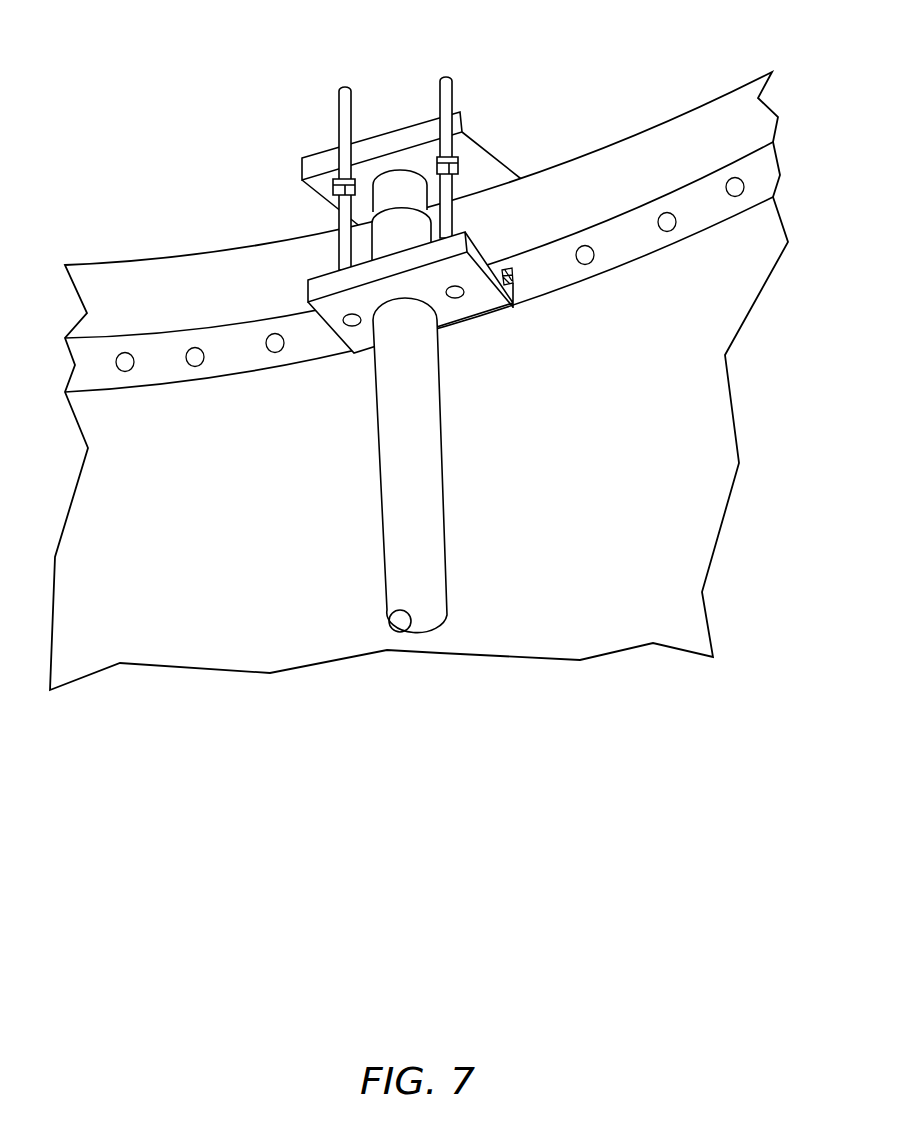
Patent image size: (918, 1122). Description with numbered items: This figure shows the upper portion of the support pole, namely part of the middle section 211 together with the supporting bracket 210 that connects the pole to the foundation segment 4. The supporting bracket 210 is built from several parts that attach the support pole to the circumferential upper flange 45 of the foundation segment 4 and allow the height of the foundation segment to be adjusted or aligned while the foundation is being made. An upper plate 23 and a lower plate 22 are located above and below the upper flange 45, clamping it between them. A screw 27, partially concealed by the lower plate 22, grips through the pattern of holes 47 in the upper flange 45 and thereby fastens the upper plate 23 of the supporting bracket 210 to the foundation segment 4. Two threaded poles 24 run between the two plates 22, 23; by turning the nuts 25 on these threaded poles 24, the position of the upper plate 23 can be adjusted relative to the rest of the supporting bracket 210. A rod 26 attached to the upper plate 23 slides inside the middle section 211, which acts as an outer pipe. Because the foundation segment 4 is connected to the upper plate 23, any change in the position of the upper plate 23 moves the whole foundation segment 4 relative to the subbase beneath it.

The foundation segment 4 is at (427, 373).
The upper flange 45 is at (422, 224).
The pattern of holes 47 is at (667, 232).
The supporting bracket 210 is at (399, 219).
The upper plate 23 is at (482, 152).
The lower plate 22 is at (465, 313).
The threaded poles 24 is at (347, 250).
The nuts 25 is at (446, 157).
The rod 26 is at (388, 193).
The screw 27 is at (512, 273).
The middle section 211 is at (415, 489).